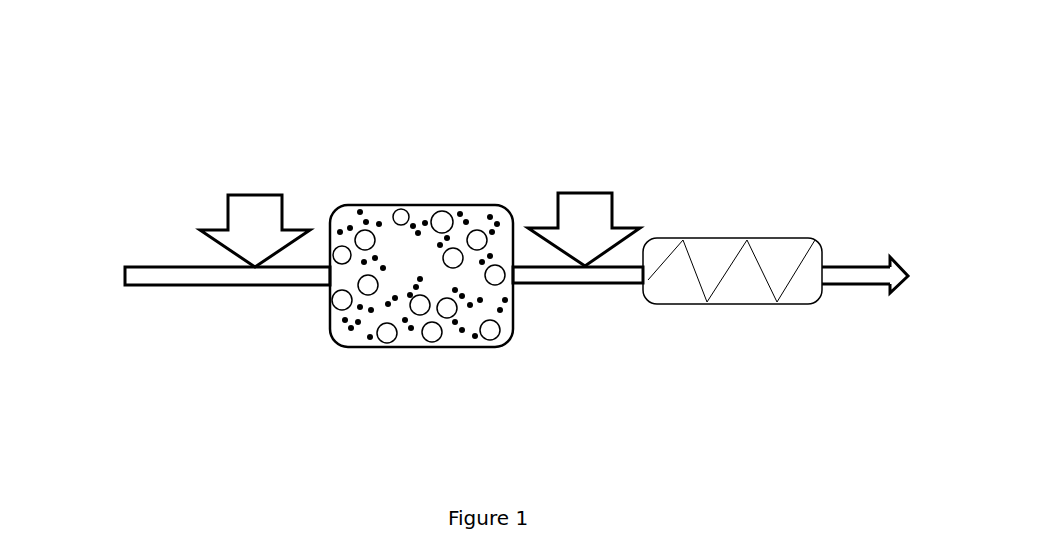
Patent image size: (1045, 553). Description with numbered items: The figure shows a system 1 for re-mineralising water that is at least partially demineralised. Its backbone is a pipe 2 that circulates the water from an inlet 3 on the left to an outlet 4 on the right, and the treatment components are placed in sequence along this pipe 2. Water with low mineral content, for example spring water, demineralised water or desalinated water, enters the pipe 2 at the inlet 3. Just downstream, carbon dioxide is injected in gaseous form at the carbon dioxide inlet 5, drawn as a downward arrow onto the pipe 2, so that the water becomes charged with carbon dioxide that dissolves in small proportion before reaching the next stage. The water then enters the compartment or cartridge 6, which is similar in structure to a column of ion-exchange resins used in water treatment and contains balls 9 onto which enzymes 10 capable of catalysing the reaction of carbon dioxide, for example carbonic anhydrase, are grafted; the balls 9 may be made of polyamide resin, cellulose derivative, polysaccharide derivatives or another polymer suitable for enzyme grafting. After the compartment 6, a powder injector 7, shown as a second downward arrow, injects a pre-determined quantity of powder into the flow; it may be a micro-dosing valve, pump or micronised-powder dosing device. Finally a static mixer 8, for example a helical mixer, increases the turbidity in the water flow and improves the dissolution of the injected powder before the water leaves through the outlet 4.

The system for re-mineralising water 1 is at (352, 152).
The pipe 2 is at (192, 286).
The inlet 3 is at (124, 268).
The outlet 4 is at (893, 266).
The inlet of carbon dioxide 5 is at (253, 196).
The compartment or cartridge 6 is at (419, 204).
The powder injector 7 is at (585, 200).
The static mixer 8 is at (737, 300).
The balls 9 is at (433, 342).
The enzymes 10 is at (355, 330).